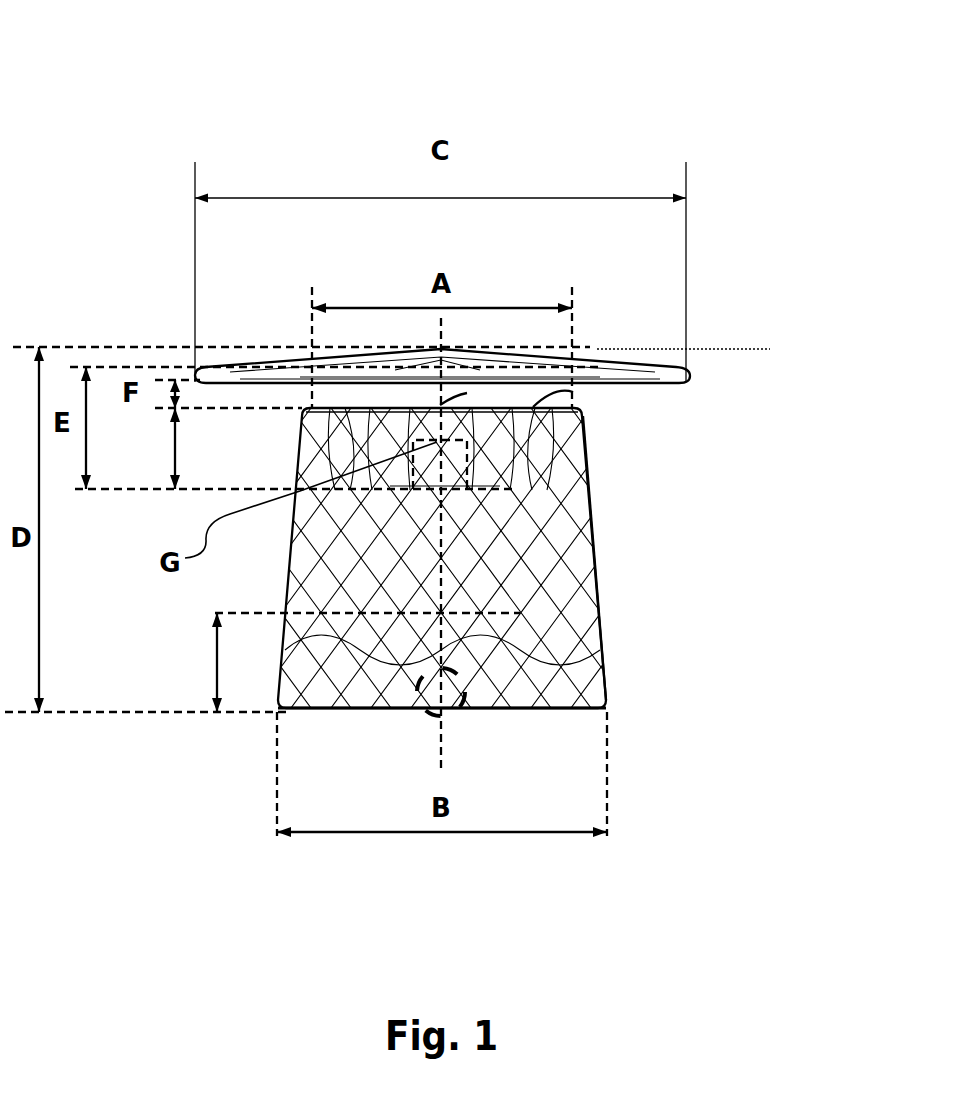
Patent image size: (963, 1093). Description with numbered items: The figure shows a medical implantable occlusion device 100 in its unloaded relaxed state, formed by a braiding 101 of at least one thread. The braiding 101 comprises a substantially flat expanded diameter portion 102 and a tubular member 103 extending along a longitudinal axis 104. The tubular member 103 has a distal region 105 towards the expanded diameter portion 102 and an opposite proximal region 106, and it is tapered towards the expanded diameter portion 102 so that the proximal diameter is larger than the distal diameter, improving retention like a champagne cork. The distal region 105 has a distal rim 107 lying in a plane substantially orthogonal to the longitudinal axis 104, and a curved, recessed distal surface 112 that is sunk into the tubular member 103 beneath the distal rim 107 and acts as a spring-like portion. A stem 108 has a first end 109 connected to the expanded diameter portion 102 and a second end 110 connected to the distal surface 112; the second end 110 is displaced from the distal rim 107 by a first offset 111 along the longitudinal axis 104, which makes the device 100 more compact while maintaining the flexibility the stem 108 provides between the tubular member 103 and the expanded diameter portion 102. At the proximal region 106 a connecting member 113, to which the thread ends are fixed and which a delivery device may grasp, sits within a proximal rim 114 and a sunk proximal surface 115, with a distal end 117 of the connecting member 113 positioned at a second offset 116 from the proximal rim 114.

The medical implantable occlusion device 100 is at (168, 65).
The braiding 101 is at (597, 623).
The expanded diameter portion 102 is at (690, 384).
The tubular member 103 is at (595, 585).
The longitudinal axis 104 is at (440, 743).
The distal region 105 is at (618, 467).
The proximal region 106 is at (672, 712).
The distal rim 107 is at (573, 392).
The stem 108 is at (467, 393).
The first end 109 is at (403, 370).
The second end 110 is at (395, 484).
The first offset 111 is at (147, 448).
The distal surface 112 is at (527, 470).
The connecting member 113 is at (495, 689).
The proximal rim 114 is at (323, 710).
The proximal surface 115 is at (352, 617).
The second offset 116 is at (337, 662).
The distal end 117 is at (400, 617).